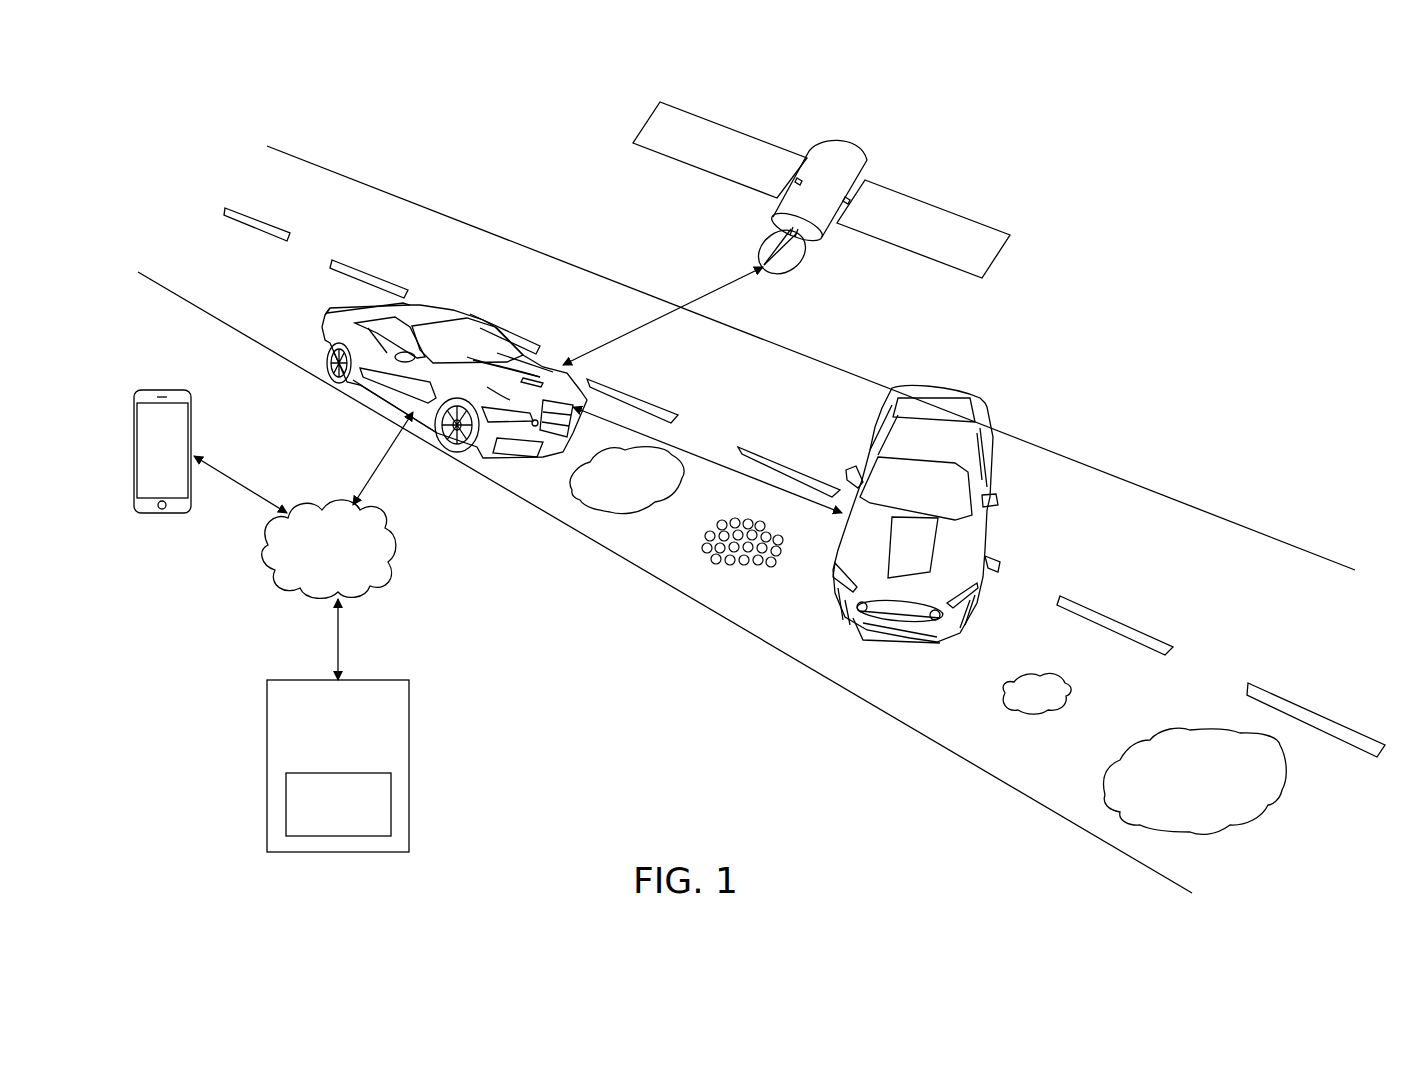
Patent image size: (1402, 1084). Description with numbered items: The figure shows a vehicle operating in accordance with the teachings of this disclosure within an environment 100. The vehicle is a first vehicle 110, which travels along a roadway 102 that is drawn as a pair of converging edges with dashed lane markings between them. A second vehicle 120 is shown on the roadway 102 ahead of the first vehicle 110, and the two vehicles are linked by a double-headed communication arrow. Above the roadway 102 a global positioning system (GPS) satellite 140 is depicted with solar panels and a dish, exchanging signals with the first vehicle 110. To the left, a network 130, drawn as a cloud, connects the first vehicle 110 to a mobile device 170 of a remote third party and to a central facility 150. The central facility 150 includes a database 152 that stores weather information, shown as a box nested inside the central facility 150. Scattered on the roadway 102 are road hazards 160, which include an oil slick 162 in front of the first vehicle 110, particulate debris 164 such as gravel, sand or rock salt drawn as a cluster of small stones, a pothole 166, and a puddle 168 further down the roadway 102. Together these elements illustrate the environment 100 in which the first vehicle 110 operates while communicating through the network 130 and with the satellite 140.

The environment 100 is at (1181, 226).
The roadway 102 is at (1173, 540).
The first vehicle 110 is at (430, 312).
The second vehicle 120 is at (940, 437).
The network 130 is at (346, 576).
The global positioning system (GPS) satellite 140 is at (968, 240).
The central facility 150 is at (356, 760).
The database 152 is at (356, 824).
The road hazards 160 is at (737, 726).
The oil slick 162 is at (590, 495).
The particulate debris 164 is at (706, 562).
The pothole 166 is at (1020, 703).
The puddle 168 is at (1140, 803).
The mobile device 170 is at (163, 390).